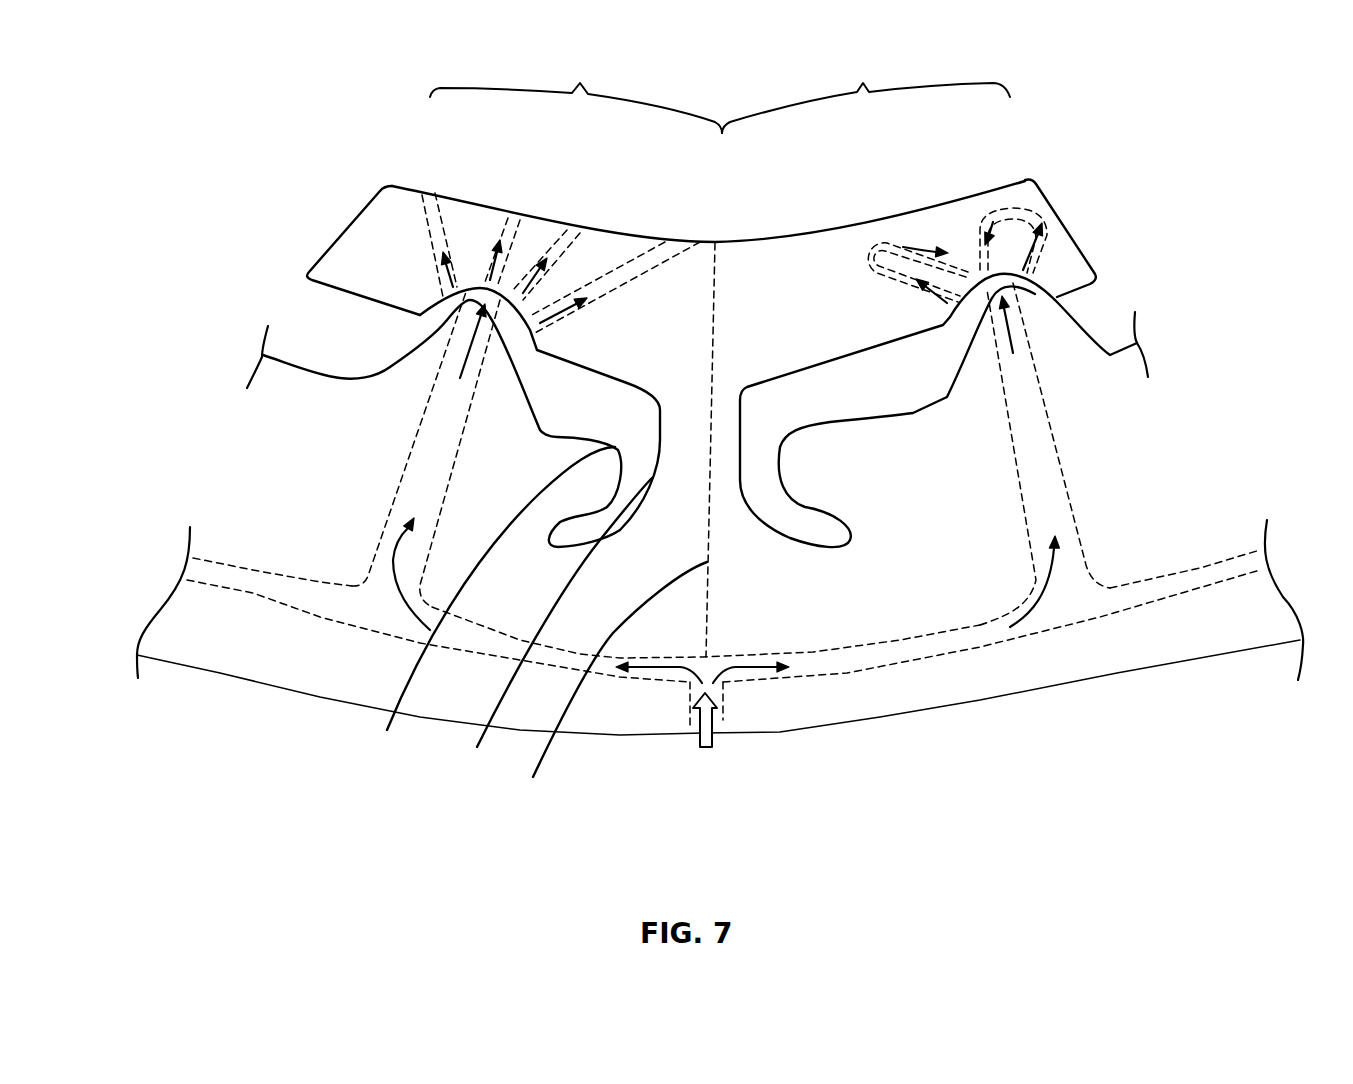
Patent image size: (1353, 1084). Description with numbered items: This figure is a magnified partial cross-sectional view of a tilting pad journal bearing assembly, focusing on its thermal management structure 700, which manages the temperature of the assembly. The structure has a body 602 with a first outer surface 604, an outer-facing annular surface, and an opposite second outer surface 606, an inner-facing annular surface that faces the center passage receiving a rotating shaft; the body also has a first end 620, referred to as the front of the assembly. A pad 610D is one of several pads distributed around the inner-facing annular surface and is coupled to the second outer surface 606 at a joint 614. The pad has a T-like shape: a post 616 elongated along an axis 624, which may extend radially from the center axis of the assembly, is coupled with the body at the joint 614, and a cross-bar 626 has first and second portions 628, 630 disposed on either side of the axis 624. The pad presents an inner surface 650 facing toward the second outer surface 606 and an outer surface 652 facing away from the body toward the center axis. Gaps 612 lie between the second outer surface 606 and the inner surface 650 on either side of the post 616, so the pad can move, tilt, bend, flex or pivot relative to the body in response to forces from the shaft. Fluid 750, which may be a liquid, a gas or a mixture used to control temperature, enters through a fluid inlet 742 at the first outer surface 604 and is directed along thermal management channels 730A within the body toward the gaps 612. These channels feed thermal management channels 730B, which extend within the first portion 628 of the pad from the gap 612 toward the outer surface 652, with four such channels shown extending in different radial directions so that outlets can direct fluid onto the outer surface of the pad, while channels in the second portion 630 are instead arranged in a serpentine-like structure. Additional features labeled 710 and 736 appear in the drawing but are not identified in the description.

The thermal management structure 700 is at (203, 255).
The body 602 is at (290, 653).
The first outer surface 604 is at (1107, 680).
The second outer surface 606 is at (1110, 355).
The pad 610D is at (990, 173).
The gaps 612 is at (413, 362).
The joint 614 is at (551, 629).
The post 616 is at (486, 607).
The first end 620 is at (1163, 497).
The axis 624 is at (607, 685).
The cross-bar 626 is at (375, 167).
The first portion 628 is at (576, 94).
The second portion 630 is at (866, 94).
The inner surface 650 is at (818, 378).
The outer surface 652 is at (771, 233).
The tip cooling channels 710 is at (427, 195).
The thermal management channels 730A is at (410, 450).
The thermal management channels 730B is at (433, 232).
The flow branches 736 is at (797, 670).
The fluid inlet 742 is at (690, 727).
The fluid 750 is at (707, 740).